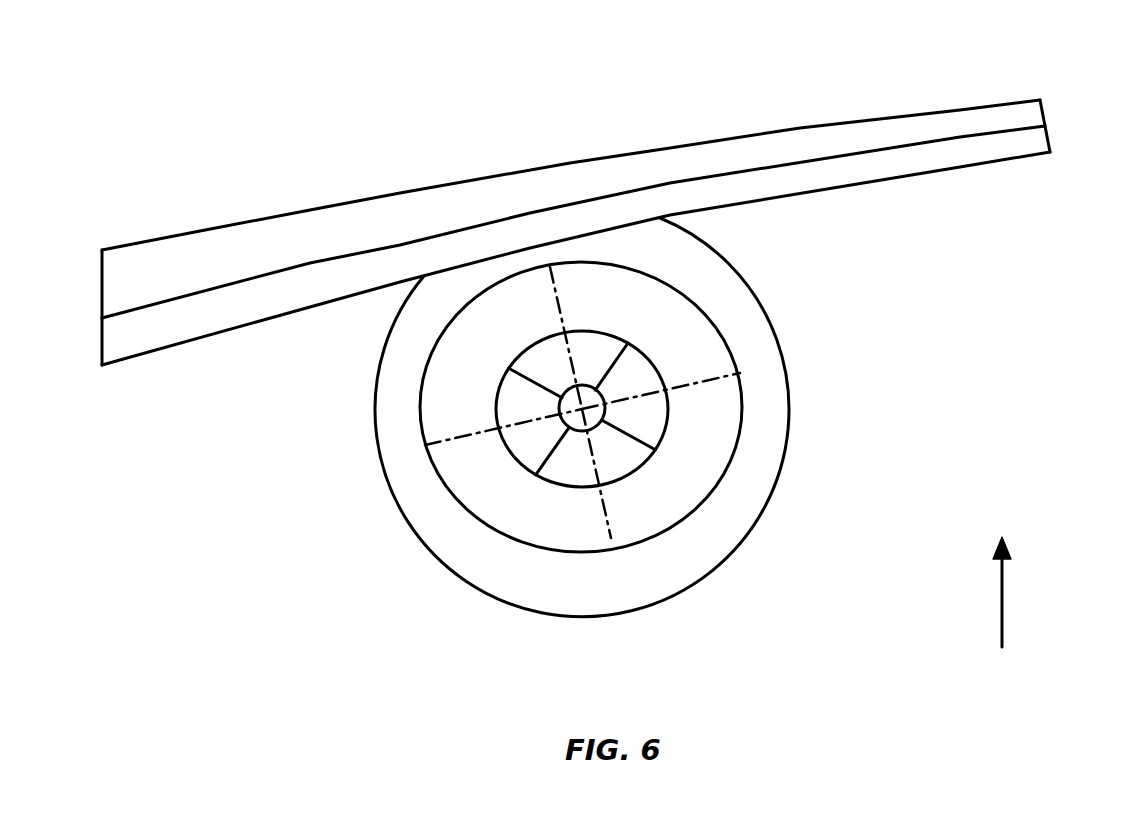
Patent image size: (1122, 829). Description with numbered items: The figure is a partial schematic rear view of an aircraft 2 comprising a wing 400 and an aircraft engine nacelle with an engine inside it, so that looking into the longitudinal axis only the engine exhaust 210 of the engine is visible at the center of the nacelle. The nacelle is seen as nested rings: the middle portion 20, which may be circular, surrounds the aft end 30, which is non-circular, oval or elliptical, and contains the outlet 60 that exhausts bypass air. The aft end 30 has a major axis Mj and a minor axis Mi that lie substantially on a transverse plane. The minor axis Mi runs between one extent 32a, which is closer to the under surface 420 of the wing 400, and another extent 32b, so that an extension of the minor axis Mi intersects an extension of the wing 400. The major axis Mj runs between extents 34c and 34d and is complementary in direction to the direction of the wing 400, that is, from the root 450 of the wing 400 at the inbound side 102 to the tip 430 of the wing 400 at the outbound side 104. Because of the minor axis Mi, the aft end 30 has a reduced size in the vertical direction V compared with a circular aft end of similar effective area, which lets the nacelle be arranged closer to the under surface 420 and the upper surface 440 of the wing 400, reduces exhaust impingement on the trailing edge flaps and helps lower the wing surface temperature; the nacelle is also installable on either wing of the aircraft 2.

The aircraft 2 is at (183, 92).
The middle portion 20 is at (699, 606).
The aft end 30 is at (408, 363).
The outlet 60 is at (700, 465).
The engine exhaust 210 is at (599, 424).
The extent of the minor axis 32a is at (547, 267).
The extent of the minor axis 32b is at (611, 538).
The extent of the major axis 34c is at (425, 448).
The extent of the major axis 34d is at (740, 373).
The minor axis Mi is at (595, 462).
The major axis Mj is at (700, 385).
The inbound side 102 is at (318, 440).
The outbound side 104 is at (900, 416).
The wing 400 is at (604, 193).
The under surface 420 is at (997, 162).
The tip 430 is at (1040, 100).
The upper surface 440 is at (670, 147).
The root 450 is at (103, 249).
The vertical direction V is at (1002, 593).